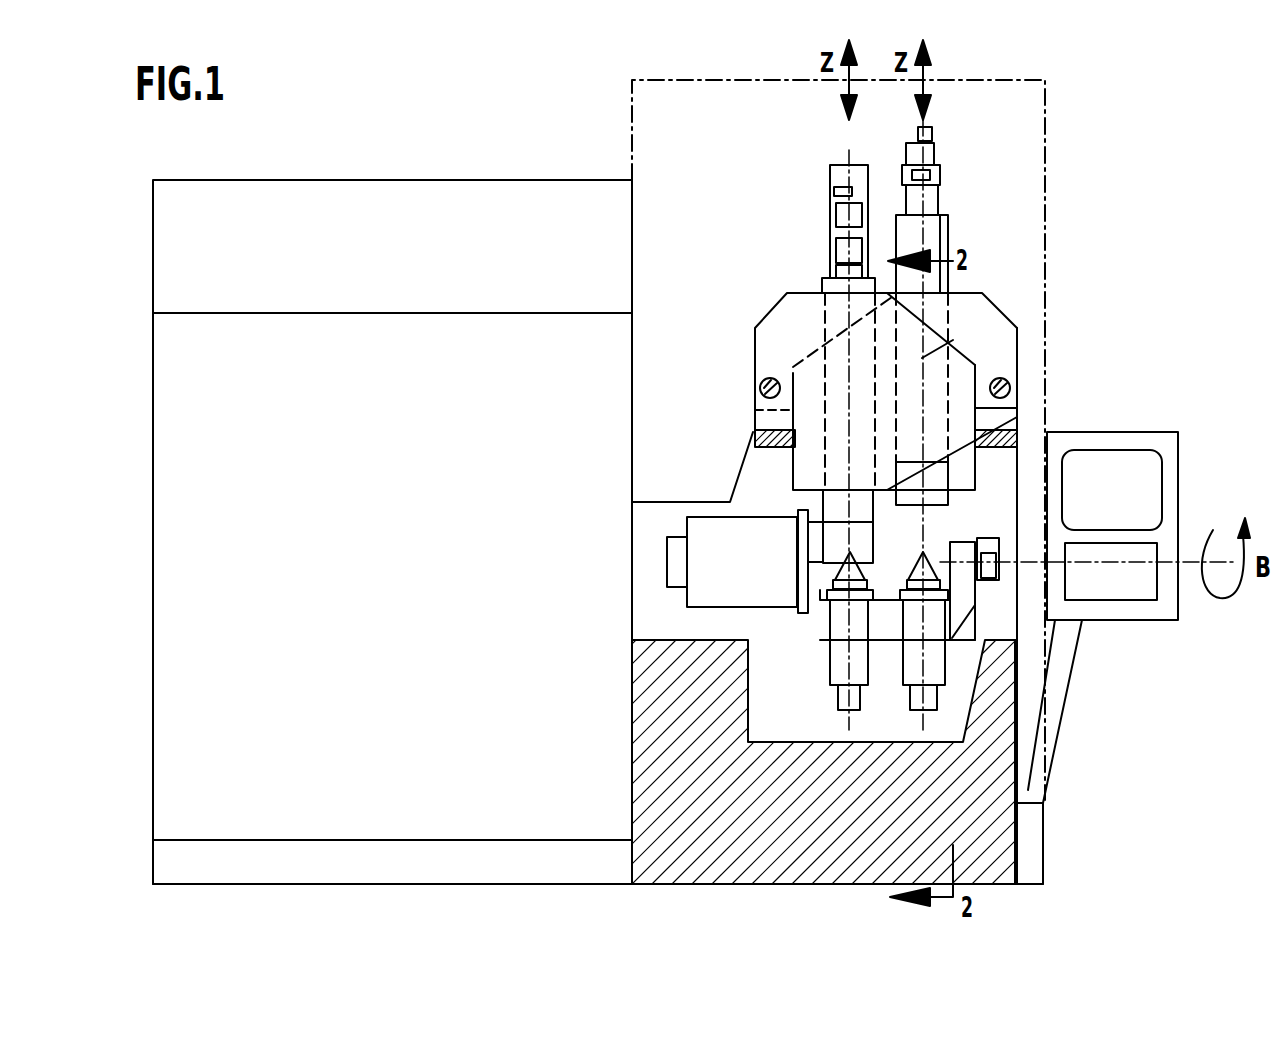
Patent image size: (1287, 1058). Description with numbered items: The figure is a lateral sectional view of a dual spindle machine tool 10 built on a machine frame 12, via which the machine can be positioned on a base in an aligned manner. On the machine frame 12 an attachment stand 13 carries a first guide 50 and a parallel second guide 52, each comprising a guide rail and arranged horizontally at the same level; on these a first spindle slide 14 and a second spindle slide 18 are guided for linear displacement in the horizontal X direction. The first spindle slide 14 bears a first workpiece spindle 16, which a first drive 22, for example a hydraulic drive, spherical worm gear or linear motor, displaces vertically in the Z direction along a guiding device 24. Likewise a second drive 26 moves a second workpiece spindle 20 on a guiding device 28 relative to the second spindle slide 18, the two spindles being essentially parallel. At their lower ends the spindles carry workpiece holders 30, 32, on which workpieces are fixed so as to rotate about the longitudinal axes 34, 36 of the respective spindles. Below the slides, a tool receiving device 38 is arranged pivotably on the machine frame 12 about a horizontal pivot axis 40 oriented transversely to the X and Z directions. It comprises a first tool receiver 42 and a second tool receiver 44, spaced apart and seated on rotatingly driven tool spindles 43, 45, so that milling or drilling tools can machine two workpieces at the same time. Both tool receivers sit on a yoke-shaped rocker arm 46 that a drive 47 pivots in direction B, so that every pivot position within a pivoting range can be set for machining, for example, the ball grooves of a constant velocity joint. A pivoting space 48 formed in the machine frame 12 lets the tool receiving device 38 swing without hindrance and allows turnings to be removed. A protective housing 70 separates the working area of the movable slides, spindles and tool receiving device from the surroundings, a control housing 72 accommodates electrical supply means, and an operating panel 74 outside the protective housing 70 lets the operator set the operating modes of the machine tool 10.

The dual spindle machine tool 10 is at (422, 160).
The machine frame 12 is at (977, 812).
The attachment stand 13 is at (740, 428).
The first spindle slide 14 is at (1017, 372).
The first workpiece spindle 16 is at (930, 227).
The second spindle slide 18 is at (885, 588).
The second workpiece spindle 20 is at (825, 285).
The first drive 22 is at (937, 172).
The guiding device 24 is at (980, 300).
The second drive 26 is at (833, 168).
The guiding device 28 is at (800, 308).
The workpiece holder 30 is at (948, 500).
The workpiece holder 32 is at (820, 603).
The longitudinal axis 34 is at (953, 340).
The longitudinal axis 36 is at (850, 353).
The tool receiving device 38 is at (990, 625).
The pivot axis 40 is at (1023, 563).
The first tool receiver 42 is at (835, 605).
The tool spindle 43 is at (863, 673).
The second tool receiver 44 is at (928, 672).
The tool spindle 45 is at (940, 728).
The yoke-shaped rocker arm 46 is at (828, 610).
The drive 47 is at (720, 558).
The pivoting space 48 is at (1015, 775).
The first guide 50 is at (1012, 430).
The second guide 52 is at (755, 447).
The protective housing 70 is at (632, 130).
The control housing 72 is at (165, 530).
The operating panel 74 is at (1150, 490).